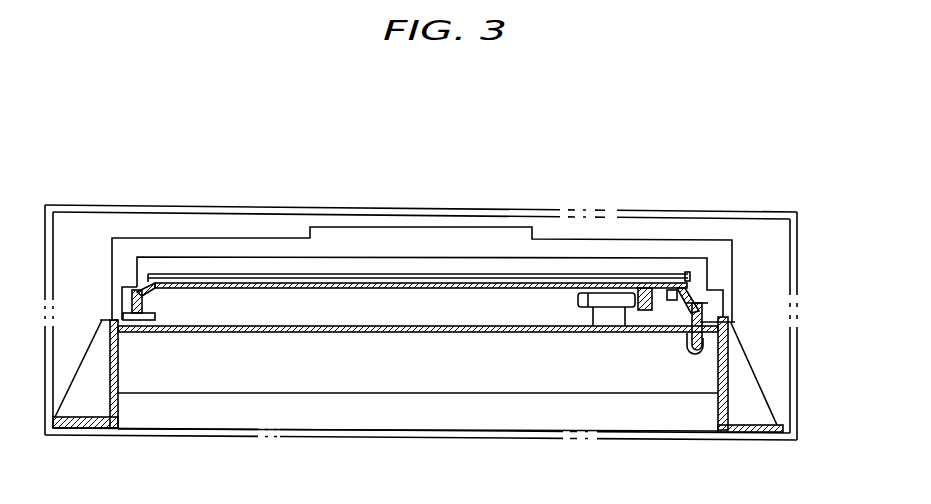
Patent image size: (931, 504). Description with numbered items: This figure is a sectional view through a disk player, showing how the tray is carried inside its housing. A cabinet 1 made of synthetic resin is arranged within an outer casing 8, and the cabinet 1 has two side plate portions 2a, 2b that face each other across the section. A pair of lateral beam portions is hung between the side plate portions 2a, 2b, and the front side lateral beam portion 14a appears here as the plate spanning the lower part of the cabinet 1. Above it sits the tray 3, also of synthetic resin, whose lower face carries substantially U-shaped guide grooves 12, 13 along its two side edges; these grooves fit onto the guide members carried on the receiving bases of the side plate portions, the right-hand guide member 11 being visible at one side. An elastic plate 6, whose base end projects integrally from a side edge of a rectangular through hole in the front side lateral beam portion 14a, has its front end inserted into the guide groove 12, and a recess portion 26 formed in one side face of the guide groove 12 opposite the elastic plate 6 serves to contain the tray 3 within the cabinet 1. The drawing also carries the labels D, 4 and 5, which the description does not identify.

The cabinet 1 is at (762, 248).
The casing 8 is at (155, 206).
The display unit D is at (388, 270).
The tray 3 is at (287, 301).
The holding bracket 4 is at (641, 288).
The connector 5 is at (577, 298).
The elastic plate 6 is at (695, 350).
The guide member 11 is at (145, 300).
The guide groove 12 is at (683, 338).
The guide groove 13 is at (137, 332).
The front side lateral beam portion 14a is at (437, 333).
The side plate portion 2a is at (728, 407).
The side plate portion 2b is at (120, 412).
The recess portion 26 is at (733, 325).